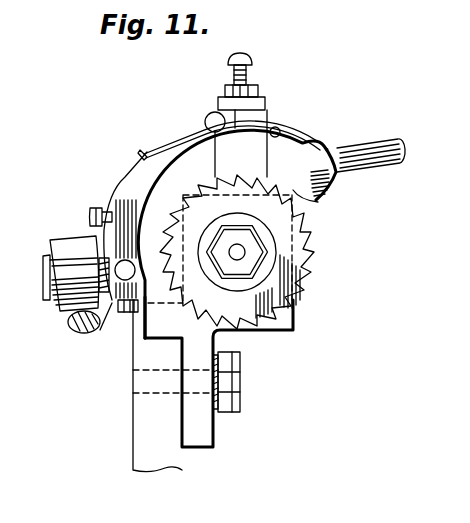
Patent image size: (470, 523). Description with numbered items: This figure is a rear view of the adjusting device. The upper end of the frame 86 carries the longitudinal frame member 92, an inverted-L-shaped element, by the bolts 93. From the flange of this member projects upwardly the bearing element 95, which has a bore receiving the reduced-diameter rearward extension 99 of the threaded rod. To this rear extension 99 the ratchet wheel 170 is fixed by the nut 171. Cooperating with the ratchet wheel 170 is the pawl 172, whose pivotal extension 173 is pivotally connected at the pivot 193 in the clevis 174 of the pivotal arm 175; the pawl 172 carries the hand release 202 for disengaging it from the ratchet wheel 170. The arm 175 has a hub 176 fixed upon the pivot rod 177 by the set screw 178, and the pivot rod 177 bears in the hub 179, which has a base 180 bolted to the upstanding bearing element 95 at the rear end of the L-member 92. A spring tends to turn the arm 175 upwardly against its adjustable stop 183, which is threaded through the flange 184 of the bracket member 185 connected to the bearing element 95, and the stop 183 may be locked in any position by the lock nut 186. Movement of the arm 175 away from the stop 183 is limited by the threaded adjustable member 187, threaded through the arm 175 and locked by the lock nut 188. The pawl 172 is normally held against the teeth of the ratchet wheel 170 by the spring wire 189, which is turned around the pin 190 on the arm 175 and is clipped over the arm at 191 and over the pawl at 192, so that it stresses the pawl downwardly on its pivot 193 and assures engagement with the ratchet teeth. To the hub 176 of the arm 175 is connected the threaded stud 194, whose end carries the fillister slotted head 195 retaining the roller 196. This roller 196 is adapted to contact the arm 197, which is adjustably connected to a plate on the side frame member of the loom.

The frame 86 is at (133, 426).
The longitudinal frame member 92 is at (202, 418).
The bolts 93 is at (243, 385).
The bearing element 95 is at (283, 242).
The rearward extension 99 is at (240, 252).
The ratchet wheel 170 is at (304, 278).
The nut 171 is at (254, 238).
The pawl 172 is at (397, 143).
The pivotal extension 173 is at (322, 129).
The clevis 174 is at (308, 133).
The pivotal arm 175 is at (192, 122).
The hub 176 is at (121, 312).
The pivot rod 177 is at (100, 330).
The set screw 178 is at (139, 313).
The hub 179 is at (142, 312).
The base 180 is at (162, 328).
The adjustable stop 183 is at (245, 61).
The flange 184 is at (267, 105).
The bracket member 185 is at (217, 169).
The lock nut 186 is at (254, 90).
The threaded adjustable member 187 is at (137, 186).
The lock nut 188 is at (99, 210).
The spring wire 189 is at (289, 138).
The pin 190 is at (213, 112).
The clip point on arm 191 is at (141, 150).
The clip point on pawl 192 is at (318, 142).
The pivot 193 is at (281, 128).
The threaded stud 194 is at (63, 283).
The fillister slotted head 195 is at (47, 258).
The roller 196 is at (62, 240).
The arm 197 is at (77, 328).
The hand release 202 is at (402, 152).